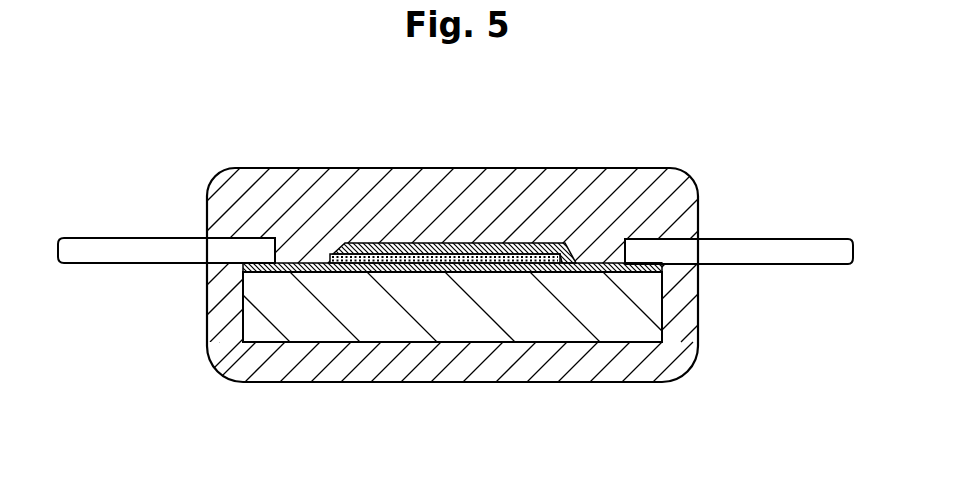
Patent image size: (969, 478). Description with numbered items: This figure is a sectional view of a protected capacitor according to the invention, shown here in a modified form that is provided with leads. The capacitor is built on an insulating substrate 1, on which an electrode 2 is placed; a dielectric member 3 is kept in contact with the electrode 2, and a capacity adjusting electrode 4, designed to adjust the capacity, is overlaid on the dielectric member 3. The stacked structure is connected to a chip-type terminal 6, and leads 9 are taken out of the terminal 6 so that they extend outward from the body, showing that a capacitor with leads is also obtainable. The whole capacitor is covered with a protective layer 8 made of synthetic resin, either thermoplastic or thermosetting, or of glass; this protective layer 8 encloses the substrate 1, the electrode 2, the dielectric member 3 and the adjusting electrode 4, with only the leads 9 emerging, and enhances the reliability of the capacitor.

The insulating substrate 1 is at (263, 327).
The electrode 2 is at (318, 263).
The dielectric member 3 is at (424, 258).
The capacity adjusting electrode 4 is at (497, 243).
The terminal 6 is at (756, 362).
The protective layer 8 is at (660, 192).
The leads 9 is at (805, 242).